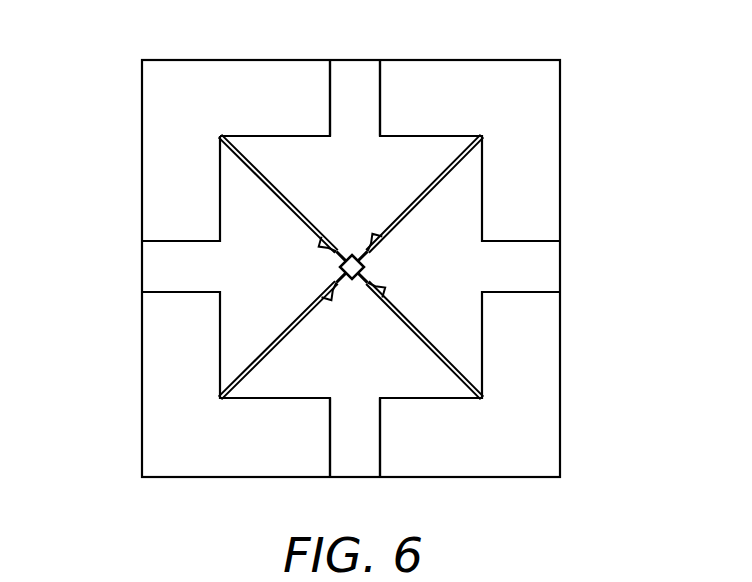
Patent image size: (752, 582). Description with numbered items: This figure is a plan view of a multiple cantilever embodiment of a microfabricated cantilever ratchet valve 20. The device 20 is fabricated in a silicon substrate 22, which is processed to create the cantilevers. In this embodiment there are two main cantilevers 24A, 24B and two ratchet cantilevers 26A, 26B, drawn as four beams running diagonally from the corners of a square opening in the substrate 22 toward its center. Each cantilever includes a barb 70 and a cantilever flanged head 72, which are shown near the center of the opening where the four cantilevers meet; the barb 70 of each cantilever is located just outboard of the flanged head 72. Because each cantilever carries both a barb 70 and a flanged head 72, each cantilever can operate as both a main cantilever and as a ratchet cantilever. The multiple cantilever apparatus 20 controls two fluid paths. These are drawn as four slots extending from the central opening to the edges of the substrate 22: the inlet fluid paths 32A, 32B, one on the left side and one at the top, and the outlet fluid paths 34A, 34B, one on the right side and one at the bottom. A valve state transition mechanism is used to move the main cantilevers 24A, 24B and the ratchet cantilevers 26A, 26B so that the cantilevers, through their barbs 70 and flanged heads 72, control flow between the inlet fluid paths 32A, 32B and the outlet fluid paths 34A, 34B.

The microfabricated cantilever ratchet valve 20 is at (100, 137).
The silicon substrate 22 is at (548, 150).
The main cantilever 24A is at (267, 173).
The main cantilever 24B is at (398, 305).
The ratchet cantilever 26A is at (432, 183).
The ratchet cantilever 26B is at (290, 337).
The inlet fluid path 32A is at (157, 265).
The inlet fluid path 32B is at (363, 68).
The outlet fluid path 34A is at (552, 268).
The outlet fluid path 34B is at (352, 468).
The barb 70 is at (323, 250).
The cantilever flanged head 72 is at (352, 253).